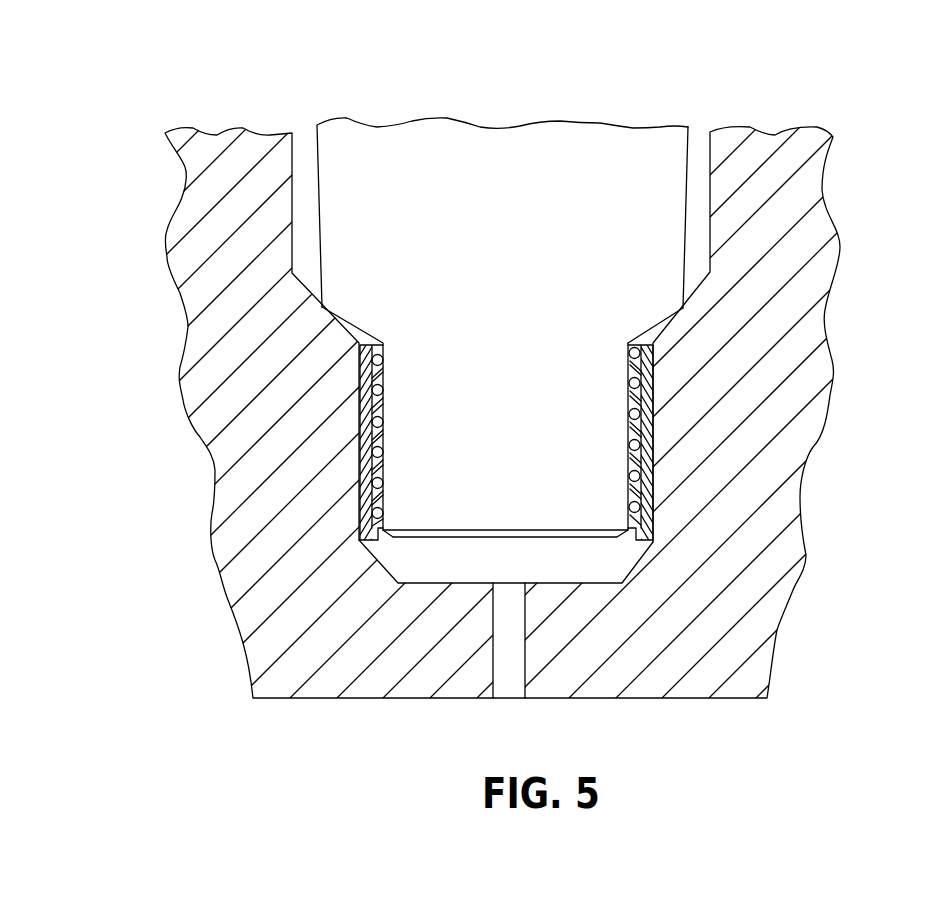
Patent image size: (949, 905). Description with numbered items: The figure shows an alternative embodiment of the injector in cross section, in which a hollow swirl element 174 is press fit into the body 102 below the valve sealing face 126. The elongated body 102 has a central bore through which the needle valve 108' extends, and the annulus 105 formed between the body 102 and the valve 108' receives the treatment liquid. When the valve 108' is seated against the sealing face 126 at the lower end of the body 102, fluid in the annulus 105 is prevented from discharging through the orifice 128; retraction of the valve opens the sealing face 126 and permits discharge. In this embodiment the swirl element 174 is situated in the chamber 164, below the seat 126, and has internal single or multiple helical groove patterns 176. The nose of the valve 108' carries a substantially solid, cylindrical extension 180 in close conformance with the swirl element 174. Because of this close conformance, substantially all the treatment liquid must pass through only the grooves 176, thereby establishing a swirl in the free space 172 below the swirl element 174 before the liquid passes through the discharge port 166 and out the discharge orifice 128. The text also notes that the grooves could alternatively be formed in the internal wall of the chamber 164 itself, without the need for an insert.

The body 102 is at (781, 338).
The annulus 105 is at (698, 132).
The valve 108' is at (502, 327).
The sealing face 126 is at (683, 308).
The orifice 128 is at (498, 693).
The chamber 164 is at (653, 383).
The discharge port 166 is at (503, 613).
The free space 172 is at (408, 558).
The swirl element 174 is at (655, 426).
The helical groove patterns 176 is at (653, 490).
The cylindrical extension 180 is at (425, 403).